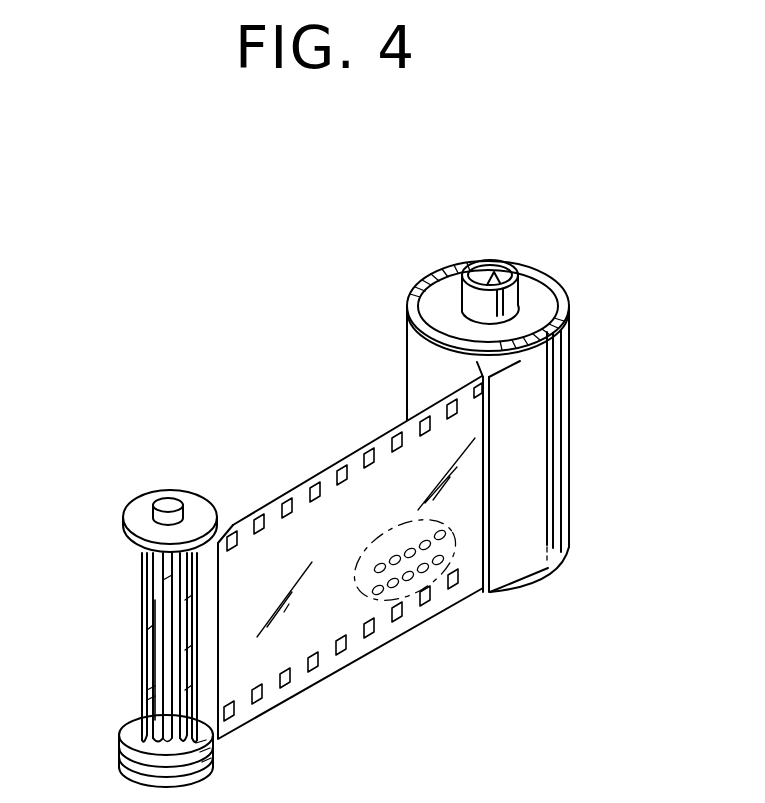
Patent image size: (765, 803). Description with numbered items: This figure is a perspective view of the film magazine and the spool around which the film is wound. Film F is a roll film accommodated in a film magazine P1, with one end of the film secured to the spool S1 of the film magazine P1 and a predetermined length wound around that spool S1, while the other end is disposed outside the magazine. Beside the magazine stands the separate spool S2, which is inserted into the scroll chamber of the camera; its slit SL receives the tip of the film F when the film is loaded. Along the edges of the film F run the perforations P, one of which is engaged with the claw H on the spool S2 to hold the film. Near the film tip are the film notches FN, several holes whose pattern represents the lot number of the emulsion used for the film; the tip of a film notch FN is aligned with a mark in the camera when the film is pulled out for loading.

The film magazine P1 is at (543, 478).
The spool of film magazine S1 is at (512, 303).
The film F is at (310, 540).
The perforation P is at (337, 478).
The film notch FN is at (378, 603).
The spool S2 is at (142, 508).
The claw H is at (172, 578).
The slot SL is at (167, 693).